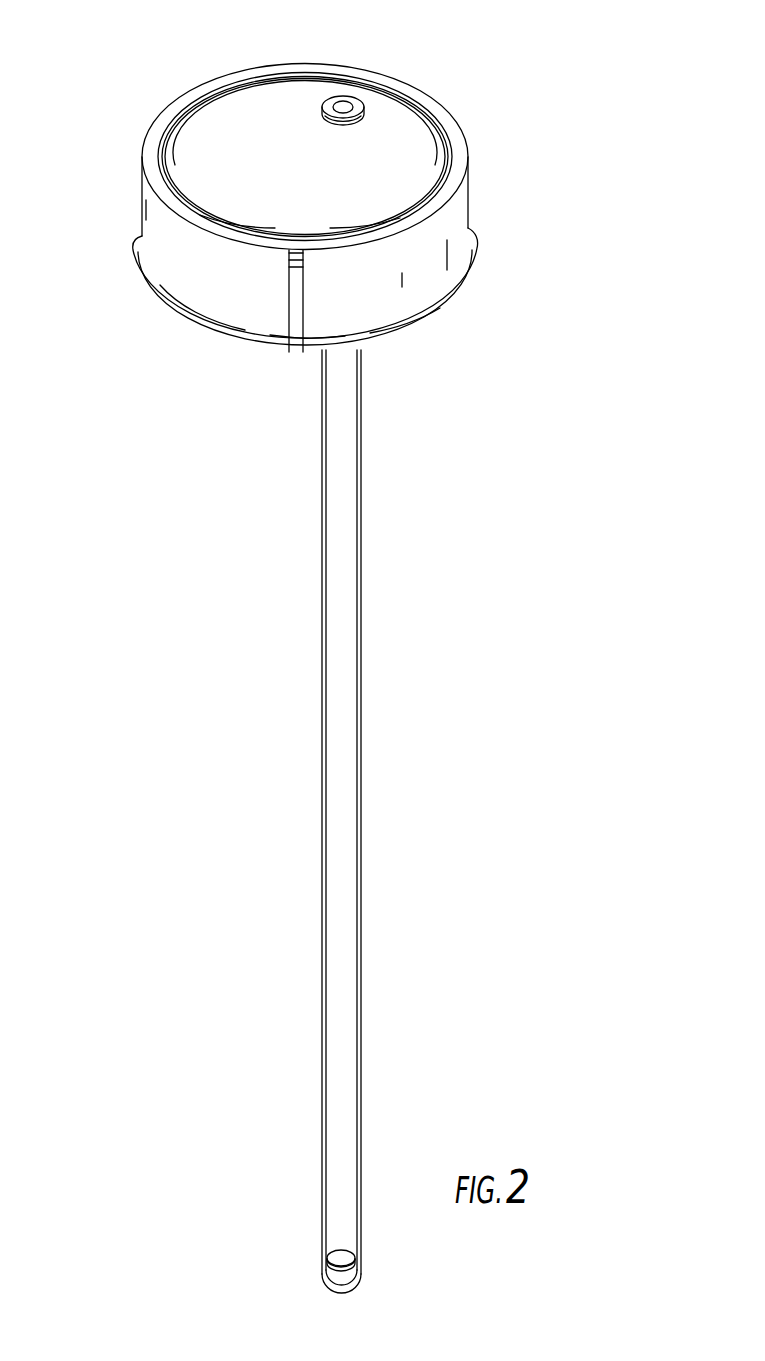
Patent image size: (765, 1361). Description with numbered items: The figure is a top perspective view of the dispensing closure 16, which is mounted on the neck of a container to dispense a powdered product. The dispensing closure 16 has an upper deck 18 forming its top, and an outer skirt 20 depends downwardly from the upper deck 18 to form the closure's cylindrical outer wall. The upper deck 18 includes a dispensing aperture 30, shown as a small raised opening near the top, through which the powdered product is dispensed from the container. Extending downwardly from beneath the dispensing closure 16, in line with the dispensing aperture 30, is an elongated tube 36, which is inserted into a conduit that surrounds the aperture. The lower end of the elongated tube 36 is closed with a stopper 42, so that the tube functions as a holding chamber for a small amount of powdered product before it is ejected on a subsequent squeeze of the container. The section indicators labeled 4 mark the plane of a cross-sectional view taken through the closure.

The dispensing closure 16 is at (557, 284).
The upper deck 18 is at (244, 116).
The outer skirt 20 is at (155, 214).
The dispensing aperture 30 is at (343, 107).
The elongated tube 36 is at (362, 602).
The stopper 42 is at (338, 1293).
The section line 4- 4 is at (418, 82).